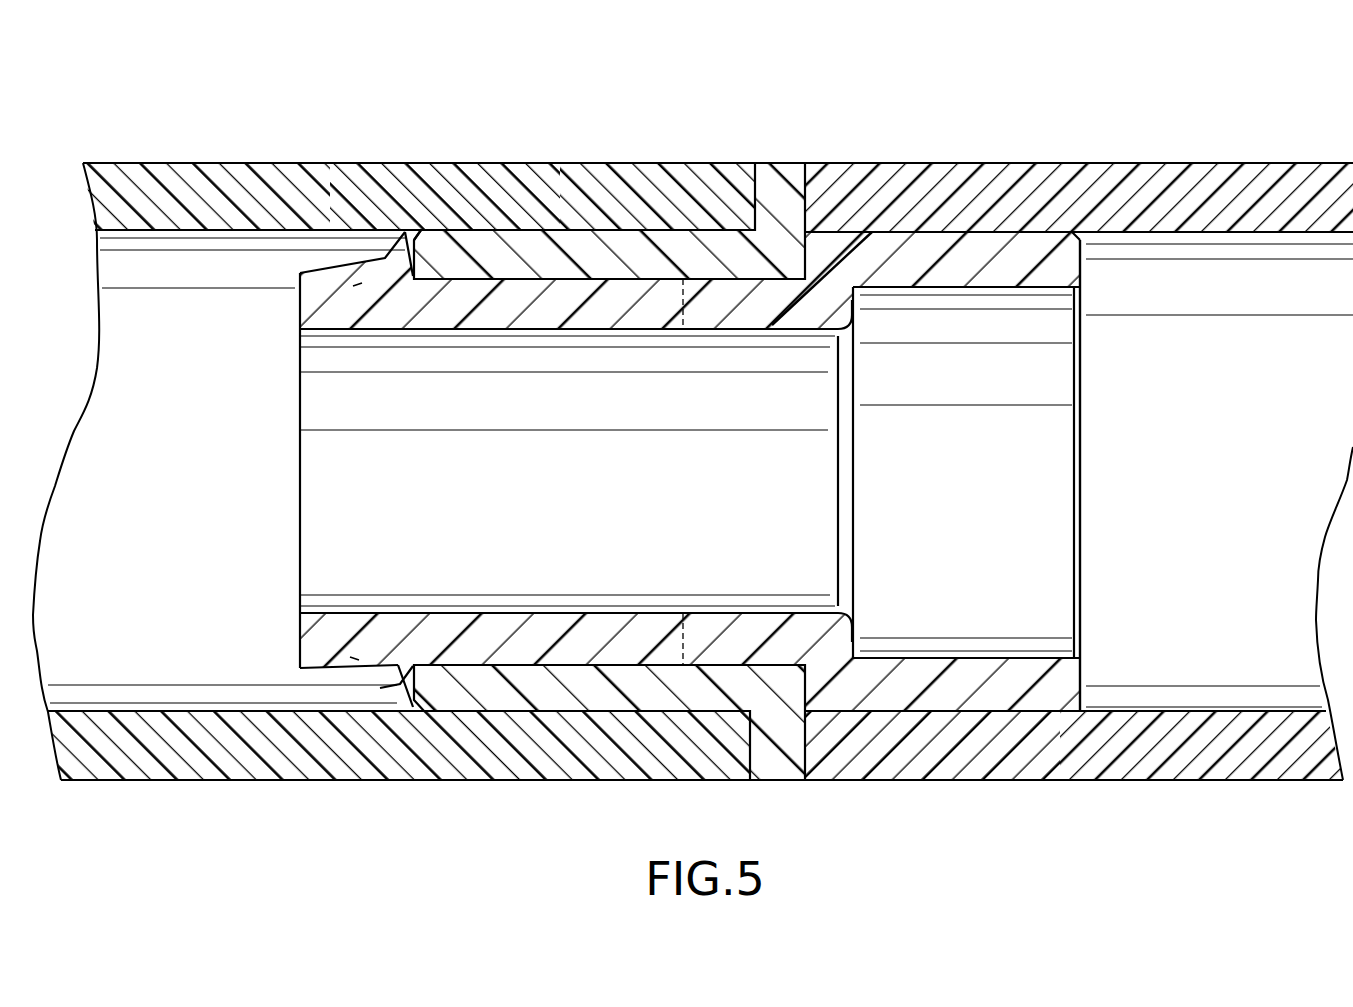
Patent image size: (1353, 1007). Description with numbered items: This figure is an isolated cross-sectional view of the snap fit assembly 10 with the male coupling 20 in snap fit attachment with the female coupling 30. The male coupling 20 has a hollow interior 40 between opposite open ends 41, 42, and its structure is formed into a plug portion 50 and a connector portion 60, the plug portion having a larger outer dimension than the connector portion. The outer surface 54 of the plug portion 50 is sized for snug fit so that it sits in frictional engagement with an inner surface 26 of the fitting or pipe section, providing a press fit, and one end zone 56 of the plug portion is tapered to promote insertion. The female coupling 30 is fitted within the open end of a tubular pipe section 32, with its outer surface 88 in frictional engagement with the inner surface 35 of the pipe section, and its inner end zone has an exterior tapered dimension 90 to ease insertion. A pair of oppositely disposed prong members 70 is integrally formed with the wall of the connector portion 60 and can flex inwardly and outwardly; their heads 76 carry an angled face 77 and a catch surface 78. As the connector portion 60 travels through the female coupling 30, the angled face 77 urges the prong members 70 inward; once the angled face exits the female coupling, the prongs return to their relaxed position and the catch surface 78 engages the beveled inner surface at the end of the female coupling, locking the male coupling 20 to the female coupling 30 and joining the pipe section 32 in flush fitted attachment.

The snap fit assembly 10 is at (938, 84).
The male coupling 20 is at (942, 286).
The inner surface 26 is at (1088, 711).
The female coupling 30 is at (537, 250).
The pipe section 32 is at (300, 165).
The inner surface 35 is at (478, 234).
The hollow interior 40 is at (637, 513).
The open end 41 is at (1081, 480).
The open end 42 is at (295, 497).
The plug portion 50 is at (970, 668).
The outer surface 54 is at (926, 712).
The end zone 56 is at (1080, 243).
The connector portion 60 is at (593, 332).
The prong members 70 is at (445, 314).
The heads 76 is at (353, 285).
The angled face 77 is at (335, 268).
The catch surface 78 is at (402, 262).
The outer surface 88 is at (643, 232).
The exterior tapered dimension 90 is at (418, 240).